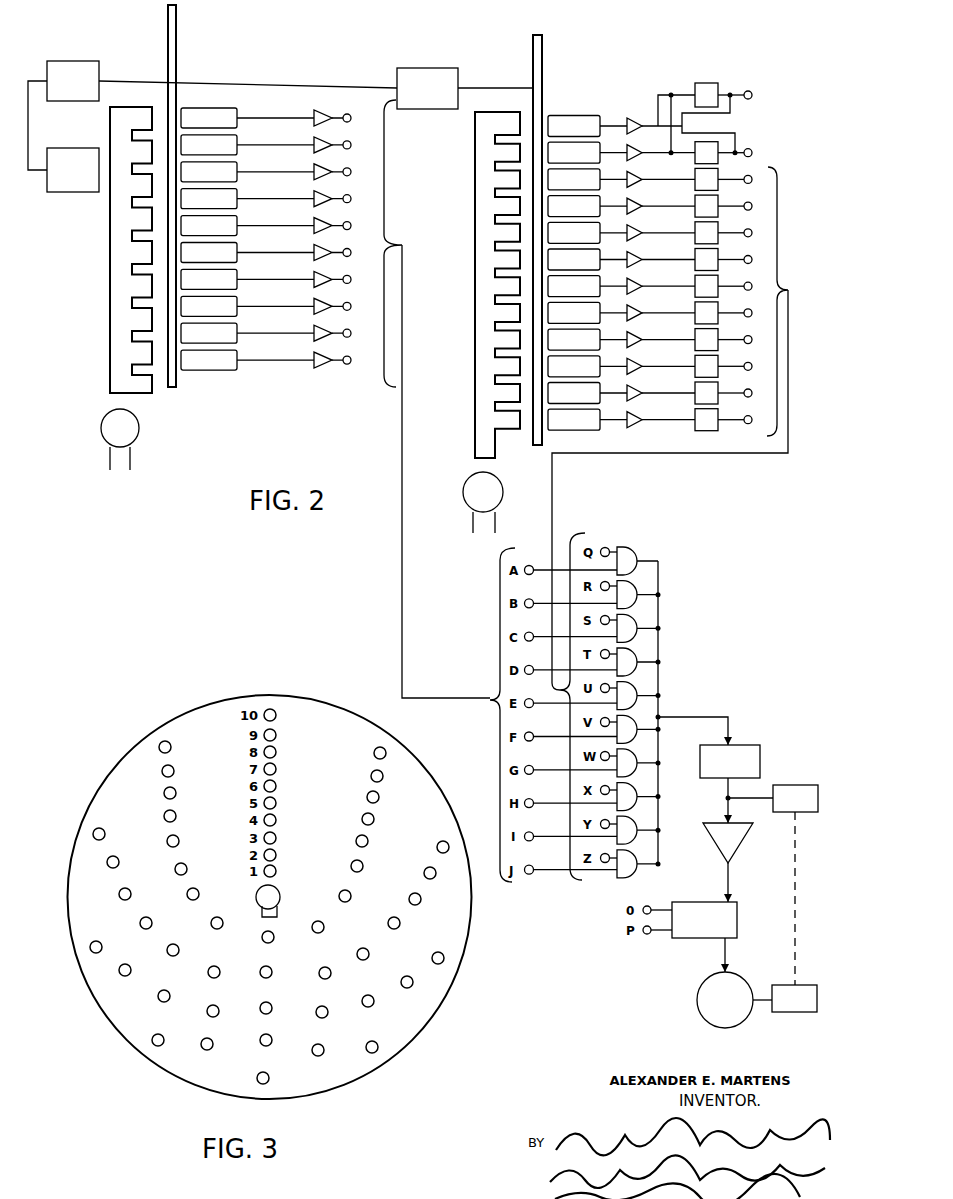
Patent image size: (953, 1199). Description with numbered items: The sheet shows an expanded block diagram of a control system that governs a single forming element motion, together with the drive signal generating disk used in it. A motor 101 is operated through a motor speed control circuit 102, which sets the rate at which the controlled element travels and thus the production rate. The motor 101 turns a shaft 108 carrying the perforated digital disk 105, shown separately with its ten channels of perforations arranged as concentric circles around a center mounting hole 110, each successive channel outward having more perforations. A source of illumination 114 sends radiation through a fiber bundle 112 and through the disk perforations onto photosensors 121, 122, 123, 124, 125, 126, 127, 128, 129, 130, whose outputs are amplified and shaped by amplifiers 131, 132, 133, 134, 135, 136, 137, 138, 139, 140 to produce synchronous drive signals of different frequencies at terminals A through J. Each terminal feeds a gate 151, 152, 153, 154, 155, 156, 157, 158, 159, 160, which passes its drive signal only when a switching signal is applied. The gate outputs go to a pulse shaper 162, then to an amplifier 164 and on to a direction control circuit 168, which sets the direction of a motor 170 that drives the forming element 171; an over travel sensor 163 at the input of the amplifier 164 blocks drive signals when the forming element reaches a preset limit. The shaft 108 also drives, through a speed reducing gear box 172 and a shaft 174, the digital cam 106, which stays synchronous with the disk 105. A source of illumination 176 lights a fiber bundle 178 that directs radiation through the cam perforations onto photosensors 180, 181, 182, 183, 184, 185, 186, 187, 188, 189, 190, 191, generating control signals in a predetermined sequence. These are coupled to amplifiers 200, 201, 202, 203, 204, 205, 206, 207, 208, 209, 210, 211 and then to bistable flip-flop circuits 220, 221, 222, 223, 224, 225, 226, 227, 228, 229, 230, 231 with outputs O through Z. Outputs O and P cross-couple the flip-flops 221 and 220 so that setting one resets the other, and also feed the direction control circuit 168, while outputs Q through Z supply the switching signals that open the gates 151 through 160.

In FIG. 2, the motor 101 is at (73, 81).
In FIG. 2, the motor speed control circuit 102 is at (73, 170).
In FIG. 2, the digital disk 105 is at (177, 56).
In FIG. 3, the digital disk 105 is at (164, 727).
In FIG. 2, the digital cam 106 is at (543, 56).
In FIG. 2, the shaft 108 is at (318, 84).
In FIG. 3, the center mounting hole 110 is at (280, 890).
In FIG. 2, the fiber bundle 112 is at (110, 375).
In FIG. 2, the source of illumination 114 is at (102, 440).
In FIG. 2, the photosensor 121 is at (209, 118).
In FIG. 2, the photosensor 122 is at (209, 145).
In FIG. 2, the photosensor 123 is at (209, 172).
In FIG. 2, the photosensor 124 is at (209, 199).
In FIG. 2, the photosensor 125 is at (209, 226).
In FIG. 2, the photosensor 126 is at (209, 253).
In FIG. 2, the photosensor 127 is at (209, 279).
In FIG. 2, the photosensor 128 is at (209, 306).
In FIG. 2, the photosensor 129 is at (209, 333).
In FIG. 2, the photosensor 130 is at (209, 360).
In FIG. 2, the amplifier 131 is at (312, 111).
In FIG. 2, the amplifier 132 is at (312, 138).
In FIG. 2, the amplifier 133 is at (312, 165).
In FIG. 2, the amplifier 134 is at (312, 192).
In FIG. 2, the amplifier 135 is at (312, 219).
In FIG. 2, the amplifier 136 is at (312, 246).
In FIG. 2, the amplifier 137 is at (312, 272).
In FIG. 2, the amplifier 138 is at (312, 299).
In FIG. 2, the amplifier 139 is at (312, 326).
In FIG. 2, the amplifier 140 is at (312, 353).
In FIG. 2, the gate 151 is at (637, 552).
In FIG. 2, the gate 152 is at (640, 592).
In FIG. 2, the gate 153 is at (640, 627).
In FIG. 2, the gate 154 is at (640, 660).
In FIG. 2, the gate 155 is at (640, 694).
In FIG. 2, the gate 156 is at (640, 730).
In FIG. 2, the gate 157 is at (640, 765).
In FIG. 2, the gate 158 is at (640, 800).
In FIG. 2, the gate 159 is at (640, 833).
In FIG. 2, the gate 160 is at (640, 866).
In FIG. 2, the pulse shaper 162 is at (730, 761).
In FIG. 2, the over travel sensor 163 is at (795, 798).
In FIG. 2, the amplifier 164 is at (728, 843).
In FIG. 2, the direction control circuit 168 is at (704, 920).
In FIG. 2, the motor 170 is at (725, 1000).
In FIG. 2, the forming element 171 is at (794, 998).
In FIG. 2, the speed reducing gear box 172 is at (427, 88).
In FIG. 2, the shaft 174 is at (516, 86).
In FIG. 2, the source of illumination 176 is at (463, 489).
In FIG. 2, the fiber bundle 178 is at (475, 312).
In FIG. 2, the photosensor 180 is at (574, 126).
In FIG. 2, the photosensor 181 is at (574, 152).
In FIG. 2, the photosensor 182 is at (574, 179).
In FIG. 2, the photosensor 183 is at (574, 206).
In FIG. 2, the photosensor 184 is at (574, 232).
In FIG. 2, the photosensor 185 is at (574, 259).
In FIG. 2, the photosensor 186 is at (574, 286).
In FIG. 2, the photosensor 187 is at (574, 312).
In FIG. 2, the photosensor 188 is at (574, 339).
In FIG. 2, the photosensor 189 is at (574, 366).
In FIG. 2, the photosensor 190 is at (574, 393).
In FIG. 2, the photosensor 191 is at (574, 419).
In FIG. 2, the amplifier 200 is at (650, 106).
In FIG. 2, the amplifier 201 is at (634, 150).
In FIG. 2, the amplifier 202 is at (634, 176).
In FIG. 2, the amplifier 203 is at (634, 203).
In FIG. 2, the amplifier 204 is at (634, 230).
In FIG. 2, the amplifier 205 is at (634, 256).
In FIG. 2, the amplifier 206 is at (634, 283).
In FIG. 2, the amplifier 207 is at (634, 310).
In FIG. 2, the amplifier 208 is at (634, 337).
In FIG. 2, the amplifier 209 is at (634, 363).
In FIG. 2, the amplifier 210 is at (634, 390).
In FIG. 2, the amplifier 211 is at (634, 417).
In FIG. 2, the bistable flip-flop circuit 220 is at (711, 83).
In FIG. 2, the bistable flip-flop circuit 221 is at (710, 157).
In FIG. 2, the bistable flip-flop circuit 222 is at (718, 176).
In FIG. 2, the bistable flip-flop circuit 223 is at (718, 203).
In FIG. 2, the bistable flip-flop circuit 224 is at (718, 229).
In FIG. 2, the bistable flip-flop circuit 225 is at (718, 256).
In FIG. 2, the bistable flip-flop circuit 226 is at (718, 283).
In FIG. 2, the bistable flip-flop circuit 227 is at (718, 310).
In FIG. 2, the bistable flip-flop circuit 228 is at (718, 337).
In FIG. 2, the bistable flip-flop circuit 229 is at (718, 364).
In FIG. 2, the bistable flip-flop circuit 230 is at (718, 391).
In FIG. 2, the bistable flip-flop circuit 231 is at (718, 417).